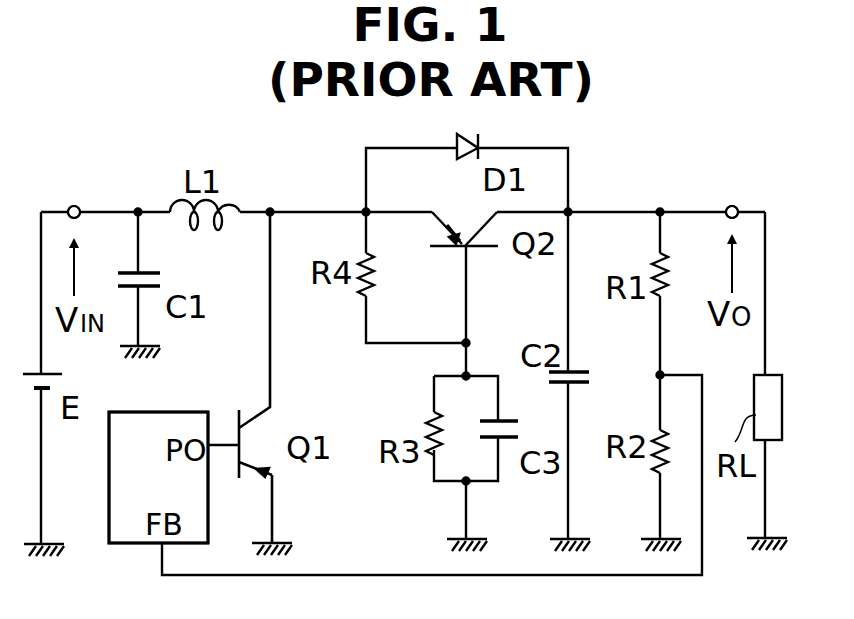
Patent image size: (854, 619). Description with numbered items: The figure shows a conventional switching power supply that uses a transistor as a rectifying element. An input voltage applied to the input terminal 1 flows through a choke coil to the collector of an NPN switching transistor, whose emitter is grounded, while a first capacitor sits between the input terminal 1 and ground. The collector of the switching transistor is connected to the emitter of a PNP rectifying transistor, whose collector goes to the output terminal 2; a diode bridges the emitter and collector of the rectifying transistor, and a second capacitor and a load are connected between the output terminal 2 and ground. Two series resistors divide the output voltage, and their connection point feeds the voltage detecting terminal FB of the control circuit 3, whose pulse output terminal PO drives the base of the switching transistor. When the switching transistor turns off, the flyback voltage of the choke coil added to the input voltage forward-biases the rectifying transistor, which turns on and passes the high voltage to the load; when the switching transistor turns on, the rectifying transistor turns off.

The input terminal 1 is at (77, 204).
The output terminal 2 is at (729, 203).
The control circuit 3 is at (184, 411).